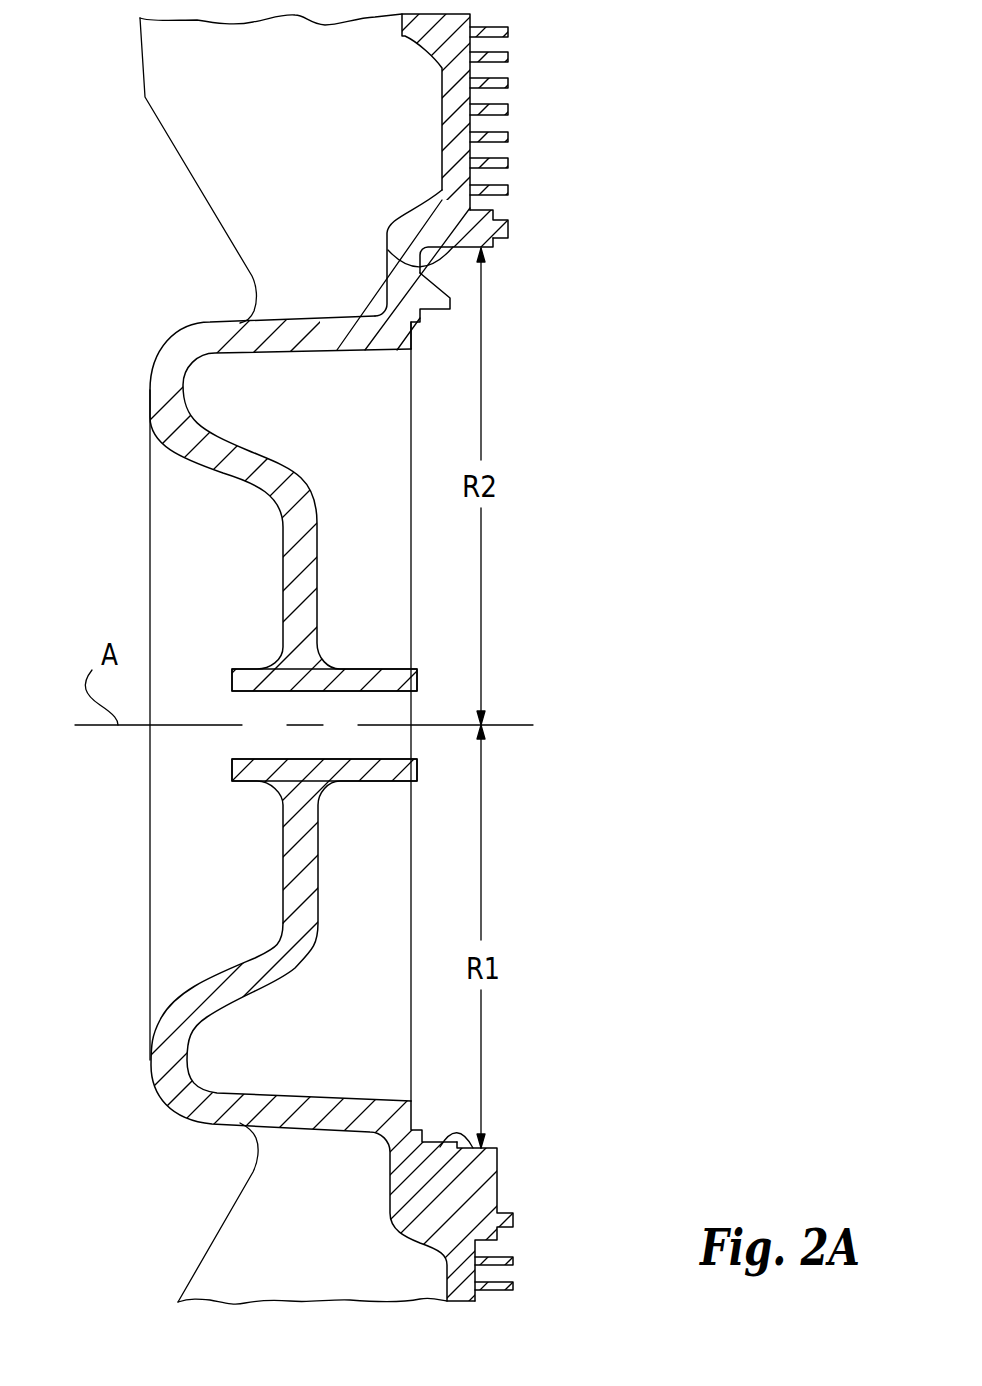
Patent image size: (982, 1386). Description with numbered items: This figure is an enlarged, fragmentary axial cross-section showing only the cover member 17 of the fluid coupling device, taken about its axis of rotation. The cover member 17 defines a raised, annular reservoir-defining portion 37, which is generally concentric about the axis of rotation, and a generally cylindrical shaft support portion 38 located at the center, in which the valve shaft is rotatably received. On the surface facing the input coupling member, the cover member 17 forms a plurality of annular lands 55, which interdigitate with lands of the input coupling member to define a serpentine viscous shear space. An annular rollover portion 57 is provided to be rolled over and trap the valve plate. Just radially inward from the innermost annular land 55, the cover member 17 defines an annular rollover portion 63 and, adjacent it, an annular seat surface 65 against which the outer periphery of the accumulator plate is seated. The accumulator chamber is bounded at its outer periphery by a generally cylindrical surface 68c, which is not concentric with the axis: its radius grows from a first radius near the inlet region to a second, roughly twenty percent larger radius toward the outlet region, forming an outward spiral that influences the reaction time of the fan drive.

The cover member 17 is at (454, 111).
The reservoir-defining portion 37 is at (182, 392).
The shaft support portion 38 is at (338, 682).
The annular lands 55 is at (508, 58).
The rollover portion 57 is at (436, 300).
The rollover portion 63 is at (507, 220).
The seat surface 65 is at (503, 238).
The cylindrical surface 68c is at (387, 250).